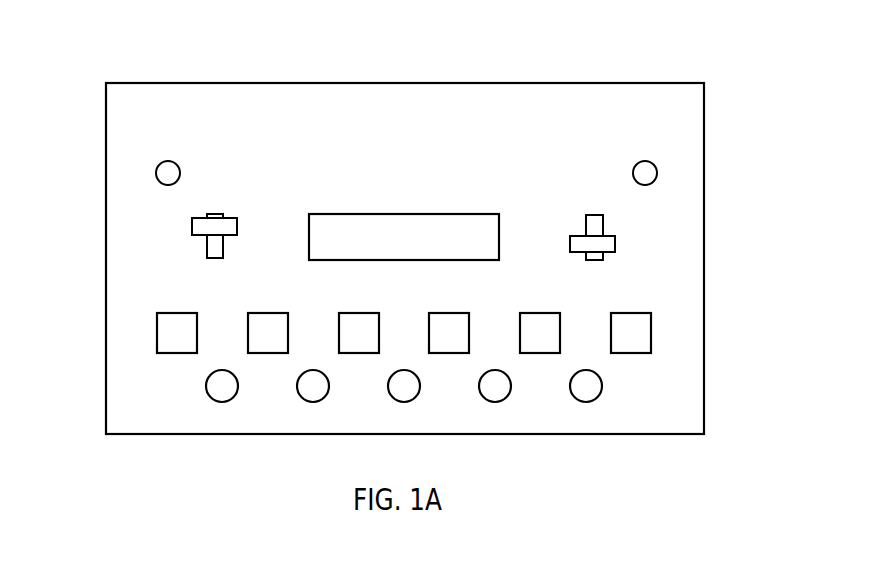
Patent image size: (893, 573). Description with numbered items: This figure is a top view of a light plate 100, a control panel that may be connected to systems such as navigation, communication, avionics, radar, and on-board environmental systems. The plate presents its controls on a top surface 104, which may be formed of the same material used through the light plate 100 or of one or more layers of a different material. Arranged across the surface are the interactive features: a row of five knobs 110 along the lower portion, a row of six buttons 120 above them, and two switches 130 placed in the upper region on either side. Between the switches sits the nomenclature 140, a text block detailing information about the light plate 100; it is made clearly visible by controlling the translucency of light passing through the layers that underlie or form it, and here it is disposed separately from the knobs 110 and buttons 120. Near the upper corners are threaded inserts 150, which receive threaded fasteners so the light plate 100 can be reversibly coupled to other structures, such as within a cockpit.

The light plate 100 is at (203, 50).
The top surface 104 is at (130, 402).
The knobs 110 is at (592, 393).
The buttons 120 is at (640, 330).
The switches 130 is at (608, 244).
The nomenclature 140 is at (394, 214).
The threaded inserts 150 is at (162, 169).